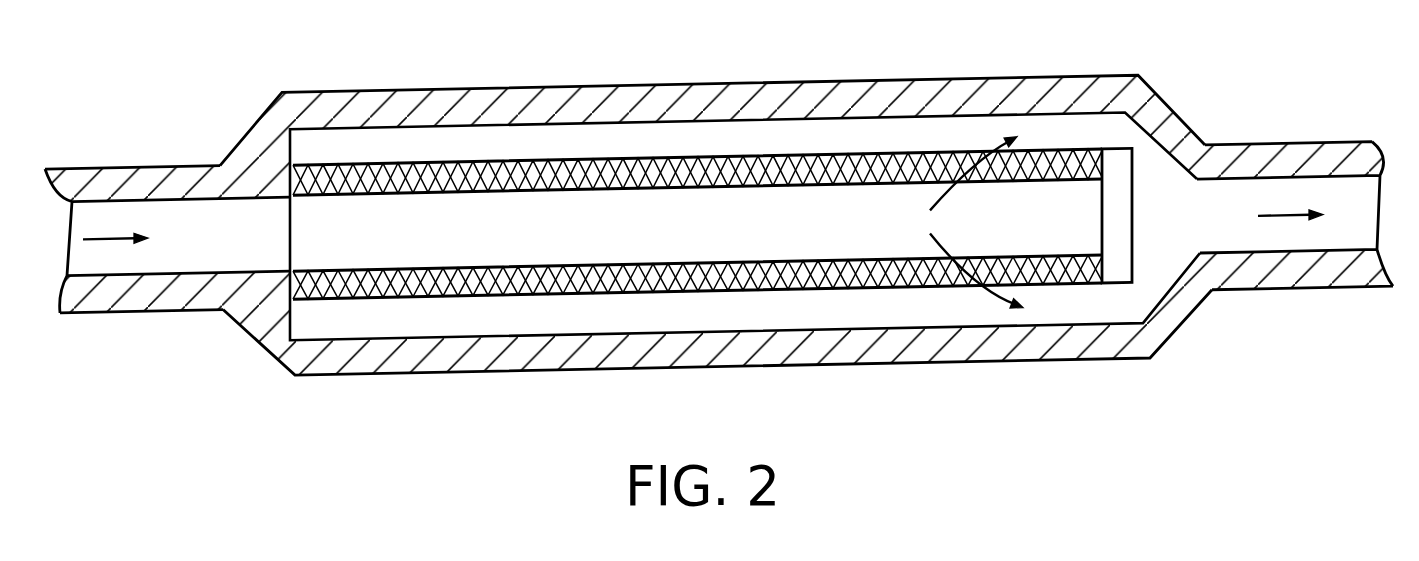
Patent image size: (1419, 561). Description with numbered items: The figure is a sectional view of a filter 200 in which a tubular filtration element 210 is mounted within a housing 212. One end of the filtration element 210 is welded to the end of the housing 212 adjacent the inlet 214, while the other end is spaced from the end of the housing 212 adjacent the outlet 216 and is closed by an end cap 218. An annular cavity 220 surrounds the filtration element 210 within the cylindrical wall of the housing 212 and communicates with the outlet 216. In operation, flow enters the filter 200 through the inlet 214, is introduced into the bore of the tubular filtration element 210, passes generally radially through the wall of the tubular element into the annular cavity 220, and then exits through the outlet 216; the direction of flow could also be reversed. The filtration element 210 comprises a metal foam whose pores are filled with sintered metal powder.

The filter 200 is at (719, 255).
The tubular filtration element 210 is at (698, 224).
The housing 212 is at (719, 225).
The inlet 214 is at (167, 238).
The outlet 216 is at (1295, 215).
The end cap 218 is at (1117, 215).
The annular cavity 220 is at (745, 225).